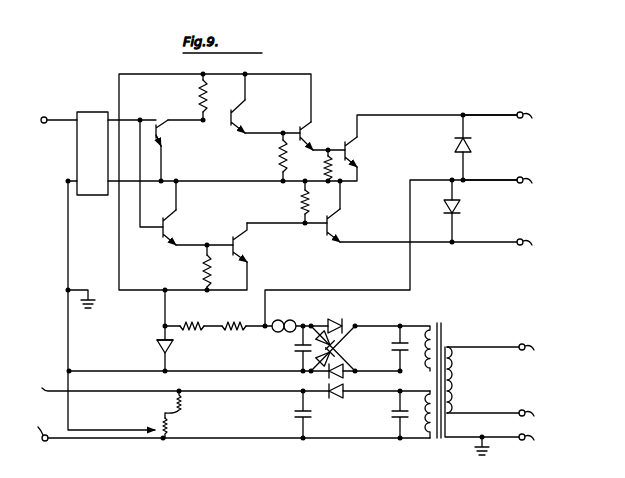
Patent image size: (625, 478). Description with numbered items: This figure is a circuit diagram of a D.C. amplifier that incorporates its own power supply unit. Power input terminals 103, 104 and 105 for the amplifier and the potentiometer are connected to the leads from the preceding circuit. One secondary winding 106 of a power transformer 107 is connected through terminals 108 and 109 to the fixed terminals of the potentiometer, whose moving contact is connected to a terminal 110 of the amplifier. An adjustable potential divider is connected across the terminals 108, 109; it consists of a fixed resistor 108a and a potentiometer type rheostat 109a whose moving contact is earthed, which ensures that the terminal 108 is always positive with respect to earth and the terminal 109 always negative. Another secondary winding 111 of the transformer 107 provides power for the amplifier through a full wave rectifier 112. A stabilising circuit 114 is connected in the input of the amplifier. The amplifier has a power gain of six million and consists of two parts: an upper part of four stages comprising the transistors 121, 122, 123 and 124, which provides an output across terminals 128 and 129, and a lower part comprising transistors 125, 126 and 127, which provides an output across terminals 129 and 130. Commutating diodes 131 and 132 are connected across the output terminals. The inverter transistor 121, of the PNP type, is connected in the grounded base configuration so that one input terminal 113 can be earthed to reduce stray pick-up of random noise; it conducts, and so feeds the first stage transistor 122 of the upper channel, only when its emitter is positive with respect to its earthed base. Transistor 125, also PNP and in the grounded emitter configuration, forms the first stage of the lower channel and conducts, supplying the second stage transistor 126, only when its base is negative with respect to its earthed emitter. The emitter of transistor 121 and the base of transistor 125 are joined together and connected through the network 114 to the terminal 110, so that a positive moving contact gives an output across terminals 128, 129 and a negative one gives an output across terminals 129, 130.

The power input terminal 103 is at (496, 333).
The power input terminal 104 is at (492, 403).
The power input terminal 105 is at (489, 405).
The secondary winding 106 is at (430, 429).
The power transformer 107 is at (452, 341).
The terminal 108 is at (196, 378).
The fixed resistor 108a is at (186, 403).
The terminal 109 is at (170, 426).
The potentiometer type rheostat 109a is at (172, 429).
The terminal 110 is at (44, 123).
The secondary winding 111 is at (424, 324).
The full wave rectifier 112 is at (353, 344).
The input terminal 113 is at (67, 183).
The stabilising circuit 114 is at (92, 153).
The inverter transistor 121 is at (165, 137).
The transistor 122 is at (249, 116).
The transistor 123 is at (314, 127).
The transistor 124 is at (359, 150).
The transistor 125 is at (181, 225).
The second stage transistor 126 is at (251, 244).
The transistor 127 is at (343, 223).
The output terminal 128 is at (505, 124).
The output terminal 129 is at (505, 170).
The output terminal 130 is at (480, 230).
The commutating diode 131 is at (470, 148).
The commutating diode 132 is at (462, 206).